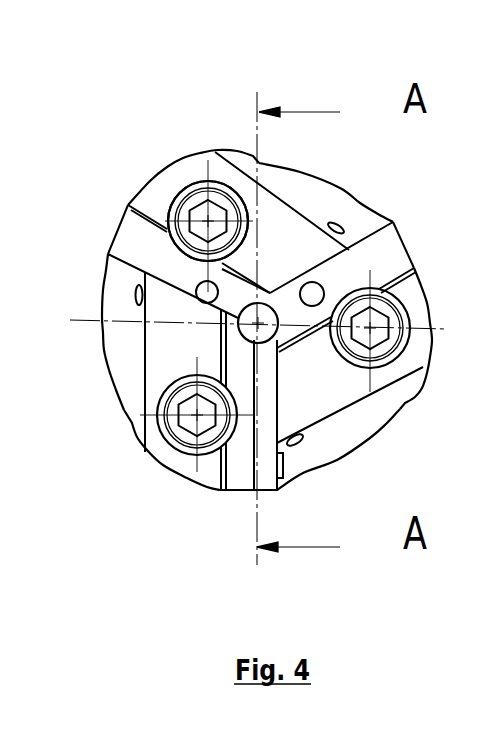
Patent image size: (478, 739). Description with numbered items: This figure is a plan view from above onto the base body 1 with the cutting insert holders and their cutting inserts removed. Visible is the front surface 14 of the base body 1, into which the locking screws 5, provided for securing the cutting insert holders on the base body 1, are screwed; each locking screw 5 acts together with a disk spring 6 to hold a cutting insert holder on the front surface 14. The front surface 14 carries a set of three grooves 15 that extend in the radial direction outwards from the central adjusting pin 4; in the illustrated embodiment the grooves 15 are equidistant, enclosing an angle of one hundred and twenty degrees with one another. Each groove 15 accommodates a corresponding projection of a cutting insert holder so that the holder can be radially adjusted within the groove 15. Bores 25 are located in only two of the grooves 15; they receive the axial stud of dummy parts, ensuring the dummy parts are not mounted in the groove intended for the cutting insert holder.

The base body 1 is at (143, 188).
The adjusting pin 4 is at (279, 313).
The locking screw 5 is at (207, 182).
The disk spring 6 is at (234, 182).
The front surface 14 is at (307, 261).
The groove 15 is at (135, 242).
The bore 25 is at (196, 292).